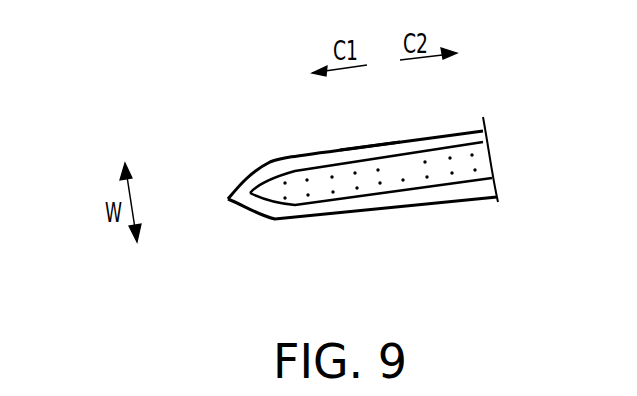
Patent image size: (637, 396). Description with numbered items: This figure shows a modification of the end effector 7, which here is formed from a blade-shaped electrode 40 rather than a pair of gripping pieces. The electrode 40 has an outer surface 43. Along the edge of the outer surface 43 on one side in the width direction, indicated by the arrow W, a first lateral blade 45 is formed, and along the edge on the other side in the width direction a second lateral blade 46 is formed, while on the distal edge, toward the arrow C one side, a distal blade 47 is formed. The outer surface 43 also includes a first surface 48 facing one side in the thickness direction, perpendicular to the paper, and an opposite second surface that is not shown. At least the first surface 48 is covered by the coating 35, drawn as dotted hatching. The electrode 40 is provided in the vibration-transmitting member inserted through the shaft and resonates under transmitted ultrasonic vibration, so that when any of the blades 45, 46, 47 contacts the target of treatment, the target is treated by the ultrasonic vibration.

The end effector 7 is at (340, 177).
The coating 35 is at (292, 203).
The electrode 40 is at (276, 218).
The outer surface 43 is at (308, 155).
The first lateral blade 45 is at (400, 204).
The second lateral blade 46 is at (367, 148).
The distal blade 47 is at (228, 199).
The first surface 48 is at (437, 162).